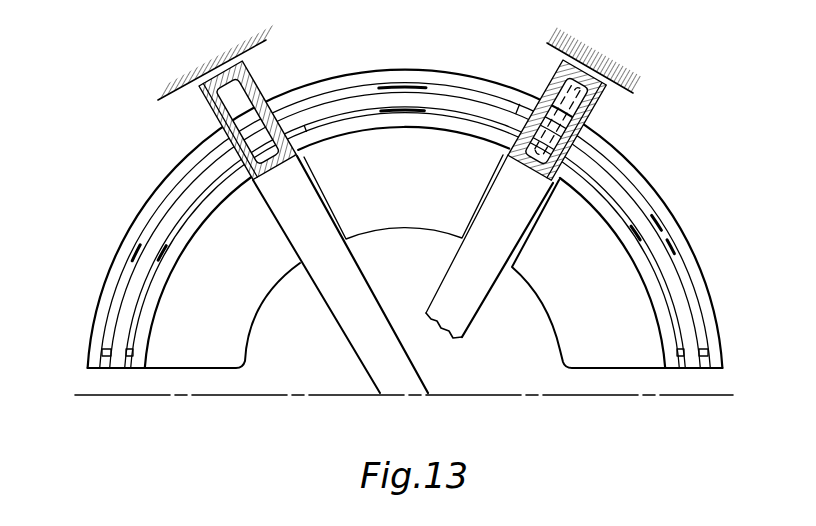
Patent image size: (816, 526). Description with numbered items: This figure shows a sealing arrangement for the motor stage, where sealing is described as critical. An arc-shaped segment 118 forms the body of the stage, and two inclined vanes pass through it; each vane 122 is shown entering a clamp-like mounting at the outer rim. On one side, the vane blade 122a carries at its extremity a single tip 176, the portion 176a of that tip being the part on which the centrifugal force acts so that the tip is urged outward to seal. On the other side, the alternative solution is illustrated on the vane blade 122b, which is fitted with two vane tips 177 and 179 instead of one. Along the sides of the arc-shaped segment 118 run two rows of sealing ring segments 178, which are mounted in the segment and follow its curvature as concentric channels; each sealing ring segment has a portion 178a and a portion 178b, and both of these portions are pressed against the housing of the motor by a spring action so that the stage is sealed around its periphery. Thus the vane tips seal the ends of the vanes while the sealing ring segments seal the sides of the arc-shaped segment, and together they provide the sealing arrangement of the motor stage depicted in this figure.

The arc-shaped segment 118 is at (233, 297).
The vane 122 is at (374, 357).
The vane blade 122a is at (546, 95).
The vane blade 122b is at (262, 82).
The tip 176 is at (583, 62).
The portion 176a is at (575, 107).
The vane tip 177 is at (206, 80).
The sealing ring segments 178 is at (174, 230).
The portion 178a is at (126, 357).
The portion 178b is at (114, 318).
The vane tip 179 is at (264, 58).